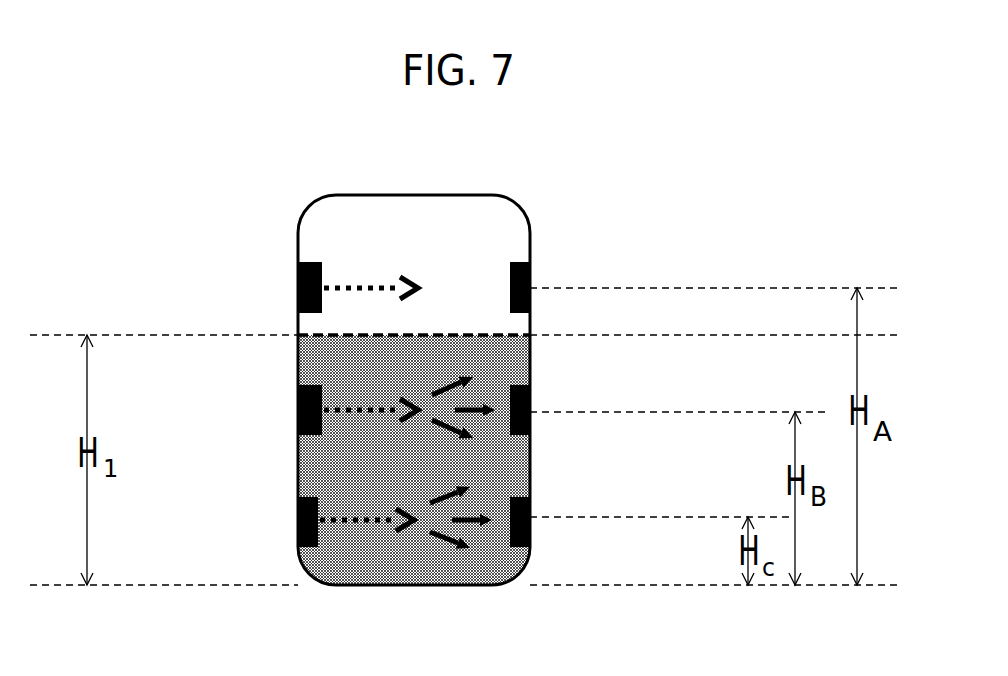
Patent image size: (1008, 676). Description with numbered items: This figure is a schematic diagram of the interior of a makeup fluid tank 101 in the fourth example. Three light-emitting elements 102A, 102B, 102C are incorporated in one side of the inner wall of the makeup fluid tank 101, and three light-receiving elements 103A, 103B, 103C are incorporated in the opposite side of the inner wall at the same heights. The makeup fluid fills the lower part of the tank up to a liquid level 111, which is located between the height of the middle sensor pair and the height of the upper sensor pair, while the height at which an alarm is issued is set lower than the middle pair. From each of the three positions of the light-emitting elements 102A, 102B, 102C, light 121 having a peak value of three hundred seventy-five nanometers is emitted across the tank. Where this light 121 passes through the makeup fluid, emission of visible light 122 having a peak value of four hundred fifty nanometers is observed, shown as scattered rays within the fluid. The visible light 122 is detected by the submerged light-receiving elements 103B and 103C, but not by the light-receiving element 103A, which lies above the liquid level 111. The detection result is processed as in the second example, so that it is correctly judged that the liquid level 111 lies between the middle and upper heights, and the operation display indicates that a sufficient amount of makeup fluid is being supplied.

The makeup fluid tank 101 is at (312, 213).
The light-emitting element 102A is at (300, 264).
The light-emitting element 102B is at (300, 386).
The light-emitting element 102C is at (302, 552).
The light-receiving element 103A is at (530, 257).
The light-receiving element 103B is at (531, 376).
The light-receiving element 103C is at (522, 568).
The liquid level of makeup fluid 111 is at (533, 318).
The light having a peak value of 375 nm 121 is at (355, 413).
The visible light having a peak value of 450 nm 122 is at (470, 413).